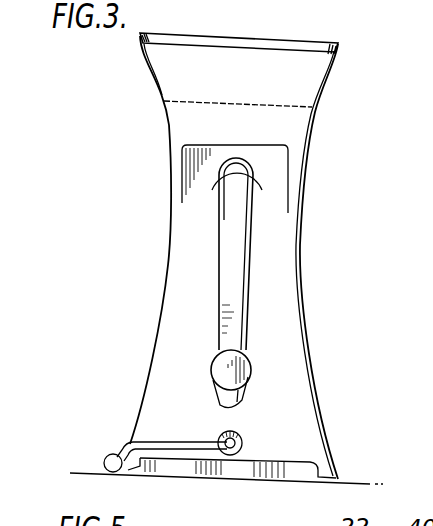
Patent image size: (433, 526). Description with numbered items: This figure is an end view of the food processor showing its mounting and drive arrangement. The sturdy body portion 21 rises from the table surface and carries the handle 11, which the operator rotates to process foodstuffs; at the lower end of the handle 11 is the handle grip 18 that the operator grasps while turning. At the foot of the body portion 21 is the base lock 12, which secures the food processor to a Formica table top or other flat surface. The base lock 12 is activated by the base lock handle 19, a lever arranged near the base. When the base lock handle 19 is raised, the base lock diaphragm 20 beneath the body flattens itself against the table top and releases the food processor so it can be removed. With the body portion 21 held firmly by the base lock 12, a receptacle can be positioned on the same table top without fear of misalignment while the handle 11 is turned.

The handle 11 is at (253, 245).
The base lock 12 is at (263, 256).
The handle grip 18 is at (252, 380).
The base lock handle 19 is at (130, 440).
The base lock diaphragm 20 is at (203, 470).
The body portion 21 is at (303, 303).